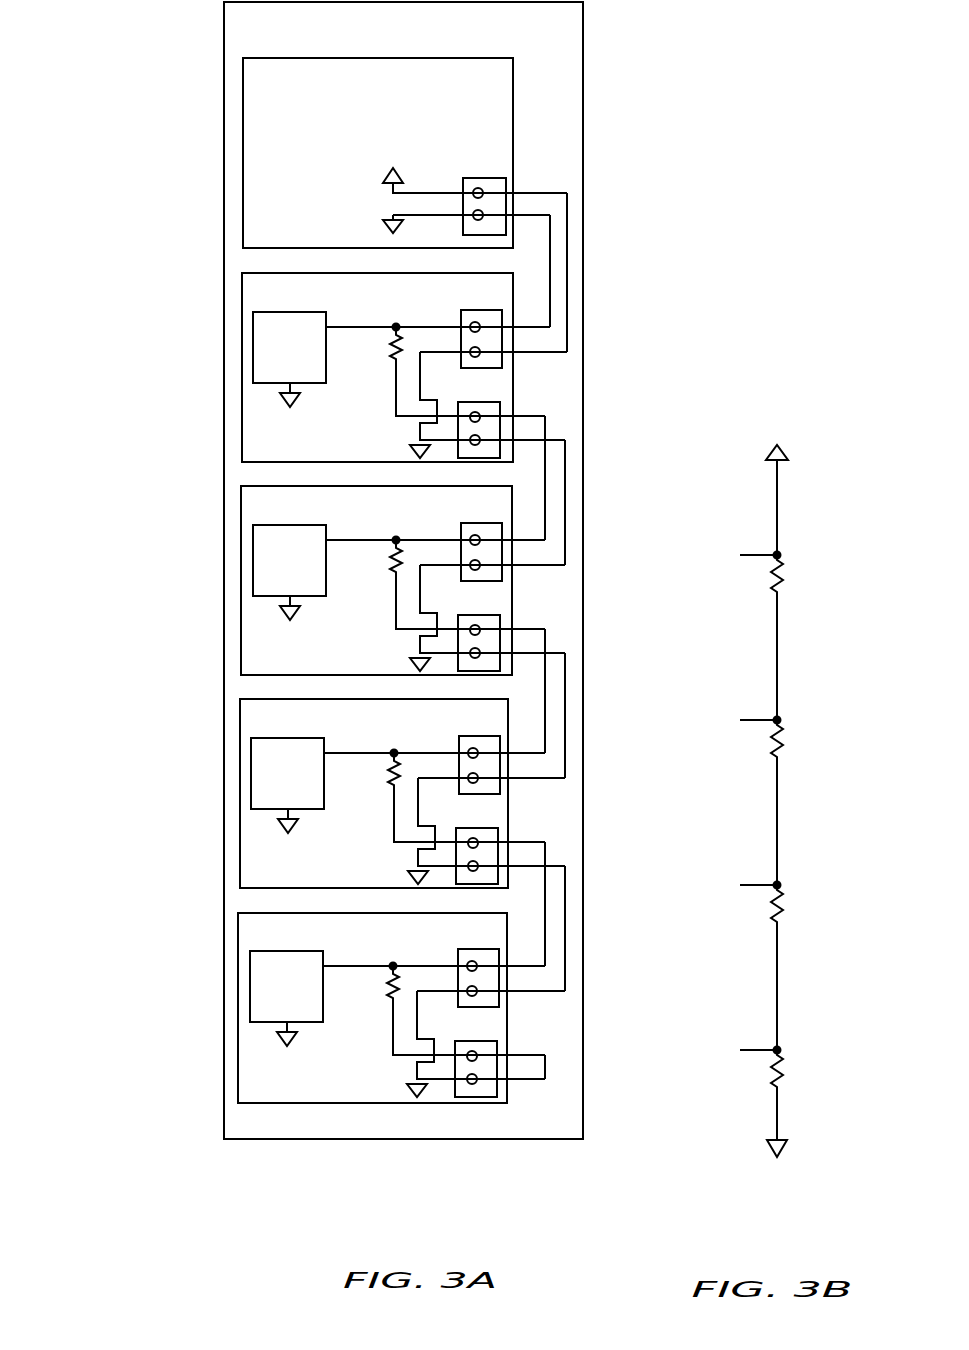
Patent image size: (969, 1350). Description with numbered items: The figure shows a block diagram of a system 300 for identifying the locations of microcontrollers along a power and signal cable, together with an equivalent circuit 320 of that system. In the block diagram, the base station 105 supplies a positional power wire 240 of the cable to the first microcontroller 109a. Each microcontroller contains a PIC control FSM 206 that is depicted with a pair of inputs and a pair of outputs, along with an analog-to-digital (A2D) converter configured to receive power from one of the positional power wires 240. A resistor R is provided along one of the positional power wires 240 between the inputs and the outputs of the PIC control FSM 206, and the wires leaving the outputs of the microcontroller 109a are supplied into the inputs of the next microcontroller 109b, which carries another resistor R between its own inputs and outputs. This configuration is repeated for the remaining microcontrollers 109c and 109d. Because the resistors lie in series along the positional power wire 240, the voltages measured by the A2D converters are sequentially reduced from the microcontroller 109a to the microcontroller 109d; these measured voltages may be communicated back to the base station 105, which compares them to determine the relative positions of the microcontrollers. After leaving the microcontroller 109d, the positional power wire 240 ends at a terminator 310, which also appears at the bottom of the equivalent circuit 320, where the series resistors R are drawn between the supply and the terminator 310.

In FIG. 3A, the system 300 is at (390, 36).
In FIG. 3A, the base station 105 is at (397, 116).
In FIG. 3A, the positional power wire 240 is at (567, 205).
In FIG. 3A, the microcontroller 109a is at (242, 377).
In FIG. 3A, the microcontroller 109b is at (241, 593).
In FIG. 3A, the microcontroller 109c is at (240, 810).
In FIG. 3A, the microcontroller 109d is at (238, 1013).
In FIG. 3A, the PIC control FSM 206 is at (267, 376).
In FIG. 3A, the terminator 310 is at (525, 1080).
In FIG. 3B, the terminator 310 is at (773, 1182).
In FIG. 3B, the equivalent circuit 320 is at (763, 415).